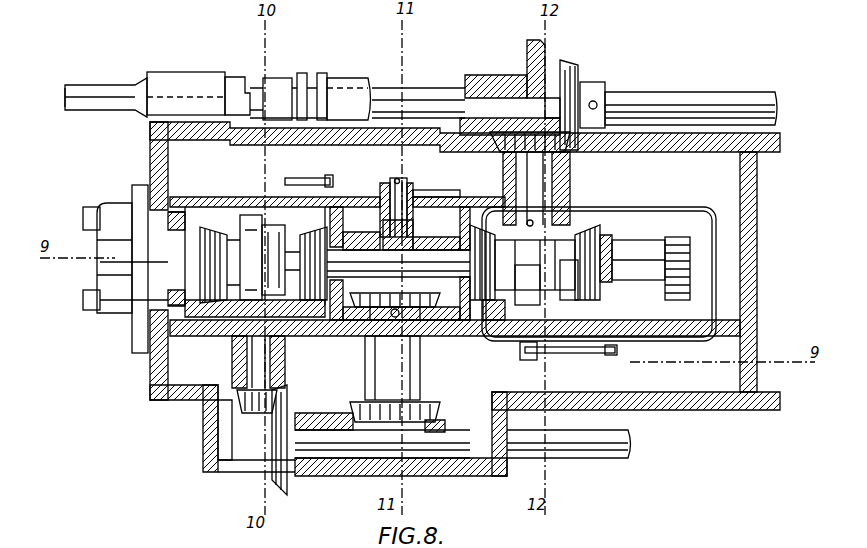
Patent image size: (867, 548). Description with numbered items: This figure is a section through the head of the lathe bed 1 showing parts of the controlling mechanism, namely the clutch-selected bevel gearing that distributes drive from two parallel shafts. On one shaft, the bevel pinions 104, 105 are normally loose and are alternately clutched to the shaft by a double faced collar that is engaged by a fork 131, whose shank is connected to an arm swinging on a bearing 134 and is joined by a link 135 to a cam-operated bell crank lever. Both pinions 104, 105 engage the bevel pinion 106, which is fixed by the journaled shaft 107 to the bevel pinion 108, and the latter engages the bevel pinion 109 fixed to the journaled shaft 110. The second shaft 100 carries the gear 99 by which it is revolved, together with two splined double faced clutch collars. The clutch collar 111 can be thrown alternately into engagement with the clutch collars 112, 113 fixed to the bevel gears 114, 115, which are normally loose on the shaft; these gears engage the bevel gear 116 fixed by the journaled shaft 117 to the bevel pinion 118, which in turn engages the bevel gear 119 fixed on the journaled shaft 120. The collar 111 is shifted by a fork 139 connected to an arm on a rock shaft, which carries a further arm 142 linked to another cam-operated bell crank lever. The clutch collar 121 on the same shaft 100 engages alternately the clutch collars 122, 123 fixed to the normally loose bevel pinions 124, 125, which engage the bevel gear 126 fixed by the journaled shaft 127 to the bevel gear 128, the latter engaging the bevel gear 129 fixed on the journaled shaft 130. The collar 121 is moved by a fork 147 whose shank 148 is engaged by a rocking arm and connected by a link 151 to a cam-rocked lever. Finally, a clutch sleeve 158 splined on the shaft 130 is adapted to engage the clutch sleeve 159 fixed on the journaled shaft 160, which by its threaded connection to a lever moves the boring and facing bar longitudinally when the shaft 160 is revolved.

The lathe bed 1 is at (690, 415).
The gear 99 is at (677, 240).
The revoluble shaft 100 is at (625, 245).
The bevel pinion 104 is at (433, 214).
The bevel pinion 105 is at (340, 228).
The bevel pinion 106 is at (362, 309).
The journaled shaft 107 is at (375, 373).
The bevel pinion 108 is at (422, 405).
The bevel pinion 109 is at (446, 418).
The journaled shaft 110 is at (605, 462).
The double faced clutch collar 111 is at (240, 225).
The clutch collar 112 is at (235, 235).
The clutch collar 113 is at (290, 240).
The bevel gear 114 is at (205, 228).
The bevel gear 115 is at (332, 192).
The bevel gear 116 is at (297, 310).
The journaled shaft 117 is at (245, 357).
The bevel pinion 118 is at (245, 405).
The bevel gear 119 is at (272, 445).
The journaled shaft 120 is at (310, 455).
The double faced clutch sleeve or collar 121 is at (545, 252).
The clutch collar 122 is at (490, 307).
The clutch collar 123 is at (575, 298).
The bevel pinion 124 is at (470, 307).
The bevel pinion 125 is at (597, 235).
The bevel gear 126 is at (490, 225).
The journaled shaft 127 is at (548, 170).
The bevel gear 128 is at (518, 132).
The bevel gear 129 is at (582, 72).
The journaled shaft 130 is at (650, 100).
The fork 131 is at (385, 240).
The bearing 134 is at (392, 190).
The link 135 is at (440, 190).
The fork 139 is at (235, 308).
The arm 142 is at (288, 135).
The fork 147 is at (545, 300).
The shank 148 is at (520, 358).
The link 151 is at (575, 353).
The clutch sleeve 158 is at (340, 78).
The clutch sleeve 159 is at (238, 72).
The journaled shaft 160 is at (100, 85).